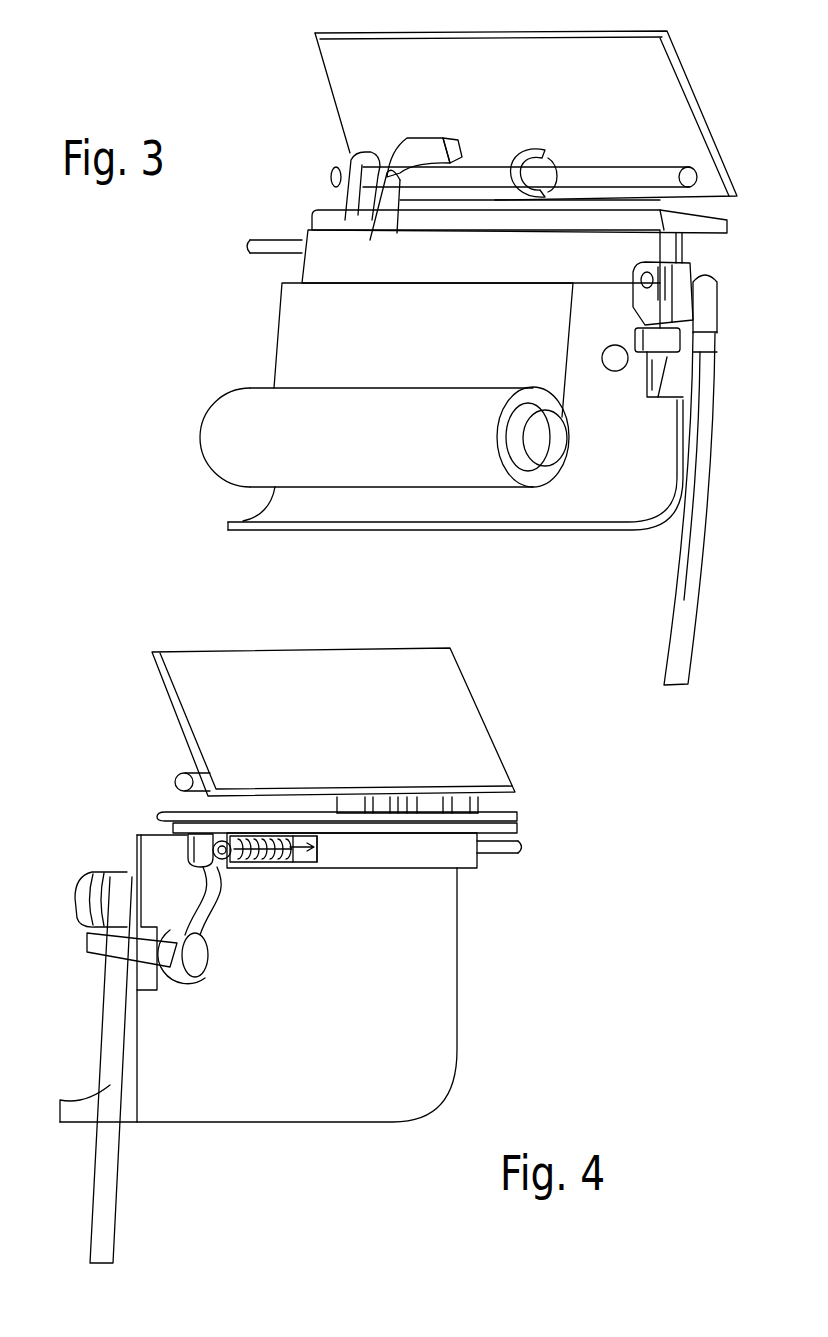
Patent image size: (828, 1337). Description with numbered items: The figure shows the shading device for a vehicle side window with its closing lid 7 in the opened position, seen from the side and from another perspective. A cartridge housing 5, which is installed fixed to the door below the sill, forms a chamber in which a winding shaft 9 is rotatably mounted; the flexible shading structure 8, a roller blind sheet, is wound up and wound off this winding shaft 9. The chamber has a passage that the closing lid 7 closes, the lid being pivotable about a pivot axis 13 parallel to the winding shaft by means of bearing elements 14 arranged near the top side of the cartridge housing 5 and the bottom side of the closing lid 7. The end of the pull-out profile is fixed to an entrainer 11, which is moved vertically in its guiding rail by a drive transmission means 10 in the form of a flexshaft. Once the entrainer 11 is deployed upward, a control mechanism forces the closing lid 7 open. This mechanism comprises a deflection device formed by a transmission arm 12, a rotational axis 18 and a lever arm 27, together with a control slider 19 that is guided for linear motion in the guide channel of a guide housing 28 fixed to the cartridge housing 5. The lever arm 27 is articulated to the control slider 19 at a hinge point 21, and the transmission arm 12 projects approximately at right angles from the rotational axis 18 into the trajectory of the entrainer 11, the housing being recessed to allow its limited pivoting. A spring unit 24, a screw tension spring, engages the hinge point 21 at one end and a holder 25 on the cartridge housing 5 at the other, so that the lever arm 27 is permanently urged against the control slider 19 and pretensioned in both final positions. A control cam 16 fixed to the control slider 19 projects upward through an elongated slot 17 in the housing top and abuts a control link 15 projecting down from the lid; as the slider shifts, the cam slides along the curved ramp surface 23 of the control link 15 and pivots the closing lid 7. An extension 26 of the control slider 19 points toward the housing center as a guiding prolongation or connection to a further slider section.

In FIG. 3, the cartridge housing 5 is at (464, 527).
In FIG. 4, the cartridge housing 5 is at (356, 1054).
In FIG. 3, the closing lid 7 is at (672, 117).
In FIG. 4, the closing lid 7 is at (361, 731).
In FIG. 3, the shading structure 8 is at (496, 356).
In FIG. 3, the winding shaft 9 is at (552, 455).
In FIG. 3, the drive transmission means 10 is at (700, 566).
In FIG. 4, the drive transmission means 10 is at (107, 1073).
In FIG. 3, the entrainer 11 is at (705, 290).
In FIG. 4, the entrainer 11 is at (80, 893).
In FIG. 3, the transmission arm 12 is at (660, 373).
In FIG. 4, the transmission arm 12 is at (167, 962).
In FIG. 3, the pivot axis 13 is at (650, 176).
In FIG. 3, the bearing elements 14 is at (350, 157).
In FIG. 3, the control link 15 is at (425, 140).
In FIG. 3, the control cam 16 is at (372, 240).
In FIG. 3, the elongated slot 17 is at (425, 228).
In FIG. 3, the rotational axis 18 is at (613, 372).
In FIG. 4, the rotational axis 18 is at (200, 965).
In FIG. 4, the control slider 19 is at (190, 857).
In FIG. 4, the hinge point 21 is at (230, 858).
In FIG. 3, the ramp surface 23 is at (463, 147).
In FIG. 4, the spring unit 24 is at (272, 862).
In FIG. 4, the holder 25 is at (315, 860).
In FIG. 3, the extension 26 is at (283, 244).
In FIG. 4, the extension 26 is at (520, 852).
In FIG. 4, the lever arm 27 is at (210, 913).
In FIG. 4, the guide housing 28 is at (462, 863).